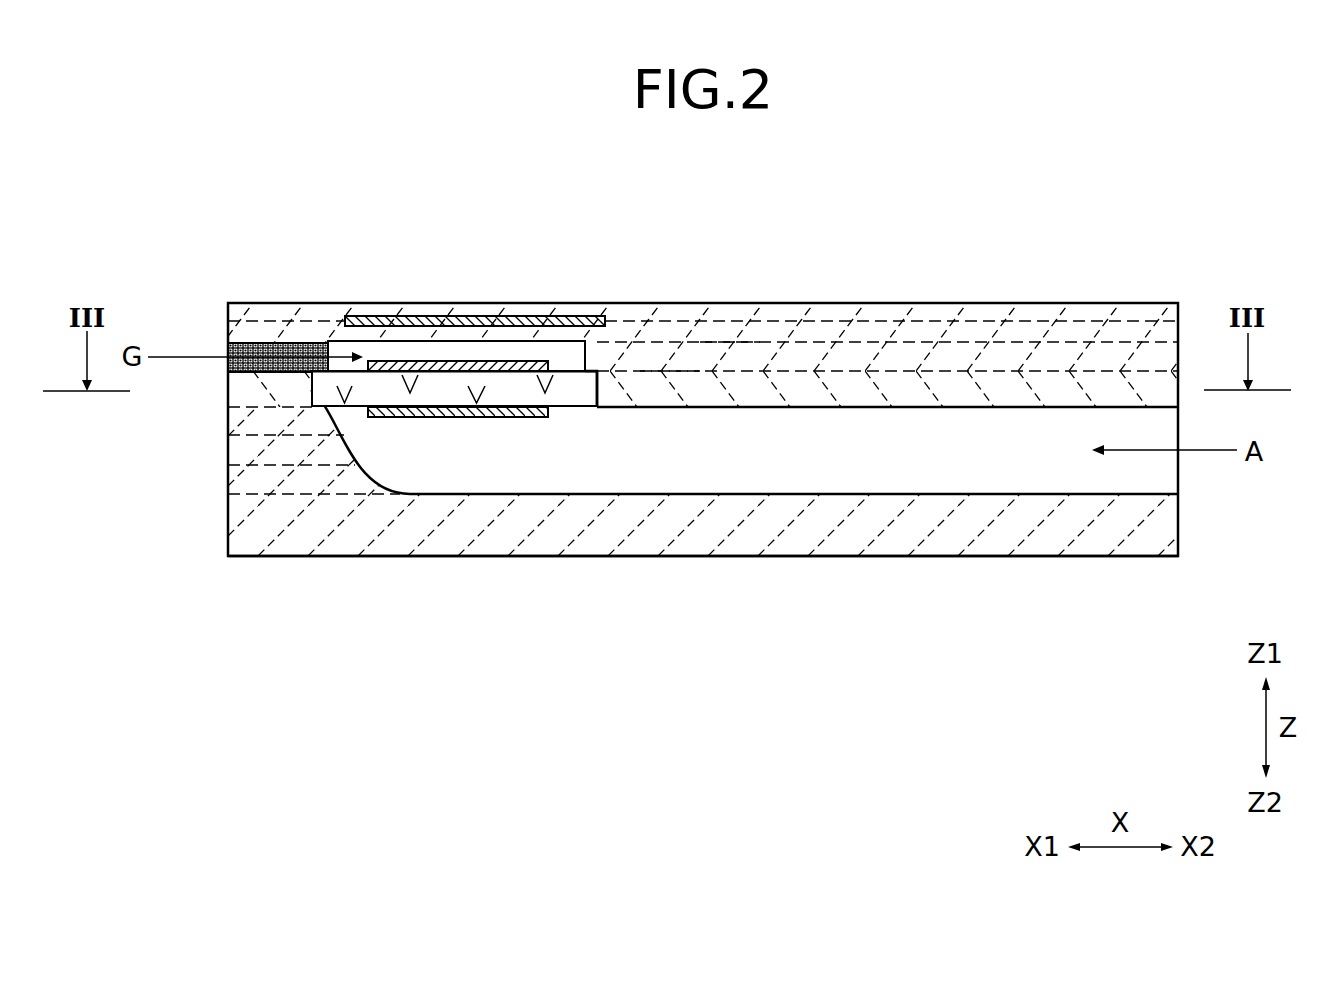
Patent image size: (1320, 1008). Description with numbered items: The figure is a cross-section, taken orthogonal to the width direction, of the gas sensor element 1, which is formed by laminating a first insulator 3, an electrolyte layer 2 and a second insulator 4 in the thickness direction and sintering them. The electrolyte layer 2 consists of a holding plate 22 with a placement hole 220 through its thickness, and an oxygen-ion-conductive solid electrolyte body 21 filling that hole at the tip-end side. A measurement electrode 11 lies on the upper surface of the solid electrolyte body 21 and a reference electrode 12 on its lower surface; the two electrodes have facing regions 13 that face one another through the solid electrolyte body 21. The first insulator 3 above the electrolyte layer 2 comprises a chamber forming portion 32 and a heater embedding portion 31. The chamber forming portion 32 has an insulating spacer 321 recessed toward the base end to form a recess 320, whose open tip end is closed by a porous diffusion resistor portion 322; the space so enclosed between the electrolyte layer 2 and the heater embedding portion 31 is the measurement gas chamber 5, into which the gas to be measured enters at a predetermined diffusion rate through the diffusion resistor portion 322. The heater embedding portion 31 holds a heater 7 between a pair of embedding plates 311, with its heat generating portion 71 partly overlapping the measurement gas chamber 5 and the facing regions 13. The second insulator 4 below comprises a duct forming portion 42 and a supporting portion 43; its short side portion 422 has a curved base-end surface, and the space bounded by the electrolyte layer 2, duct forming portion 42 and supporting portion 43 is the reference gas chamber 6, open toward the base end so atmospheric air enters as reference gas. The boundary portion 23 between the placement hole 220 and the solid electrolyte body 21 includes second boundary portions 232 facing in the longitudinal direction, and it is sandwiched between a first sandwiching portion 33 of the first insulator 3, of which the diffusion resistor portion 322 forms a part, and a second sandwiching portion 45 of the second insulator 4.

The gas sensor element 1 is at (1122, 218).
The electrolyte layer 2 is at (770, 387).
The holding plate 22 is at (652, 387).
The placement hole 220 is at (596, 392).
The boundary portion 23 is at (494, 528).
The second boundary portion 232 is at (333, 402).
The first insulator 3 is at (897, 312).
The heater embedding portion 31 is at (825, 320).
The embedding plates 311 is at (946, 315).
The chamber forming portion 32 is at (850, 352).
The recess 320 is at (572, 326).
The insulating spacer 321 is at (712, 353).
The diffusion resistor portion 322 is at (255, 352).
The first sandwiching portion 33 is at (302, 352).
The second insulator 4 is at (737, 522).
The duct forming portion 42 is at (288, 448).
The short side portion 422 is at (315, 455).
The supporting portion 43 is at (417, 530).
The second sandwiching portion 45 is at (320, 418).
The measurement gas chamber 5 is at (455, 353).
The reference gas chamber 6 is at (475, 458).
The heater 7 is at (586, 356).
The heat generating portion 71 is at (479, 340).
The measurement electrode 11 is at (430, 361).
The reference electrode 12 is at (525, 418).
The facing regions 13 is at (405, 361).
The solid electrolyte body 21 is at (497, 386).